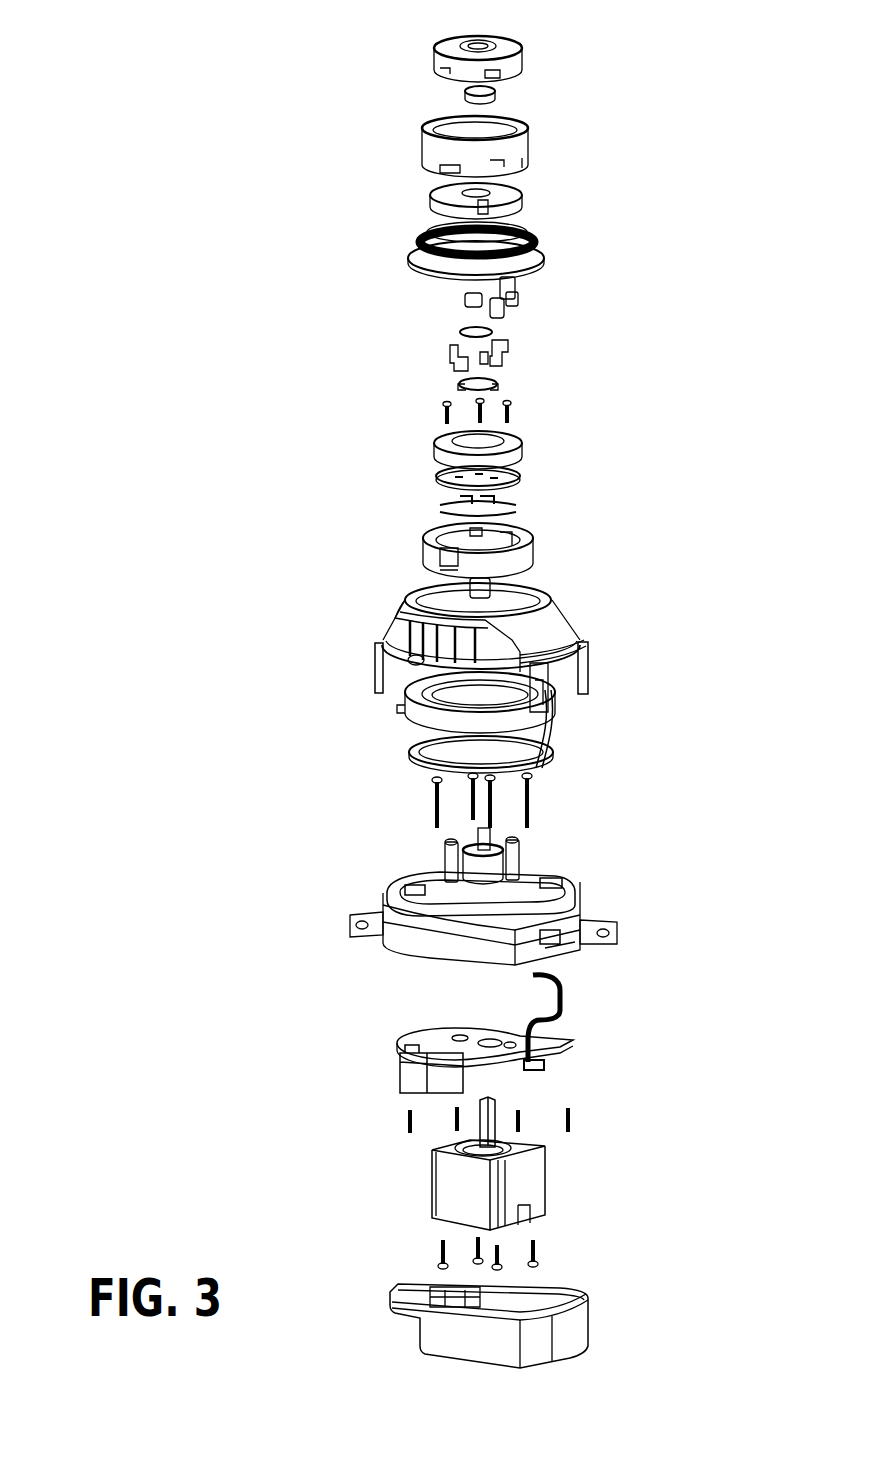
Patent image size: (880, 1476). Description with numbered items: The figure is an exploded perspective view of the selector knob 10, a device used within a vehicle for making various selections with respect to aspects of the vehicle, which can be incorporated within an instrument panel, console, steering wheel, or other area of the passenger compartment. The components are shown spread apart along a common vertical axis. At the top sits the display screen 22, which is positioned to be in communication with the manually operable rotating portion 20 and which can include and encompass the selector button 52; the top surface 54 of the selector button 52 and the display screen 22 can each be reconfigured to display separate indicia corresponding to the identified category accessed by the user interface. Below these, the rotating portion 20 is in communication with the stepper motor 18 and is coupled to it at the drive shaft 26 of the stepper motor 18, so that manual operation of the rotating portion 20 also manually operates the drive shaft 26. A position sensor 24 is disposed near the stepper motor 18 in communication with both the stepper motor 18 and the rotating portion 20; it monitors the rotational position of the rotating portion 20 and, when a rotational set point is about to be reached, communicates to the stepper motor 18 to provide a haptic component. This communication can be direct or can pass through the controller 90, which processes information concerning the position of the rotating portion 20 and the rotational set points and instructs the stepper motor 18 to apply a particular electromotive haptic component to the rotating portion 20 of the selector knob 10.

The selector knob 10 is at (676, 33).
The display screen 22 is at (505, 44).
The top surface 54 is at (463, 90).
The selector button 52 is at (492, 90).
The manually operable rotating portion 20 is at (525, 232).
The position sensor 24 is at (532, 306).
The controller 90 is at (553, 866).
The drive shaft 26 is at (489, 1112).
The stepper motor 18 is at (437, 1188).